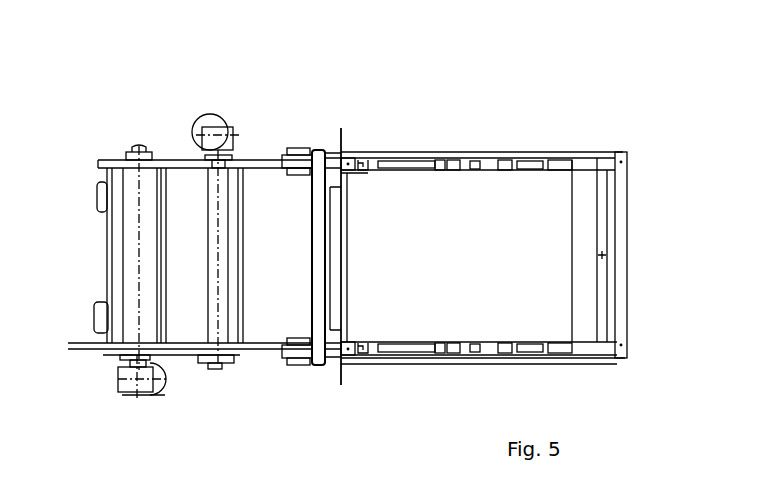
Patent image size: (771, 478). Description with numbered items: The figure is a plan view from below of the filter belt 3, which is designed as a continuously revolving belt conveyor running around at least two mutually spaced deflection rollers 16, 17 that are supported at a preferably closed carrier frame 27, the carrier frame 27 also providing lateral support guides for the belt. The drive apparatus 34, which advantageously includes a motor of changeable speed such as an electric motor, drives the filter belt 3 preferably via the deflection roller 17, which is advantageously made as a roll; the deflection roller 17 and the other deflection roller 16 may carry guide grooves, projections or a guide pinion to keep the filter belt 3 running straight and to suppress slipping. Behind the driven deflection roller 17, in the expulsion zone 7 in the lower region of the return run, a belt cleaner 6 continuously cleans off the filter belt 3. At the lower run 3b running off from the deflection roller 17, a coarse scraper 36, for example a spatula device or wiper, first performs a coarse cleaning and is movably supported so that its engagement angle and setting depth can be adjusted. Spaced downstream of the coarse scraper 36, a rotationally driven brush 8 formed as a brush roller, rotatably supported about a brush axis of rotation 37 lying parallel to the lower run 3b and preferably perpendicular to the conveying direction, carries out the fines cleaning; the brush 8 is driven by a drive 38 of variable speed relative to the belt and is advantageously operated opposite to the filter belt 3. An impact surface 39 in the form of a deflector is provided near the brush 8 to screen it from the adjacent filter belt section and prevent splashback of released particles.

The filter belt 3 is at (523, 188).
The lower run 3b is at (455, 192).
The belt cleaner 6 is at (238, 328).
The expulsion zone 7 is at (123, 309).
The brush 8 is at (228, 200).
The deflection roller 16 is at (578, 340).
The deflection roller 17 is at (140, 192).
The carrier frame 27 is at (400, 157).
The drive apparatus 34 is at (150, 395).
The coarse scraper 36 is at (162, 340).
The brush axis of rotation 37 is at (220, 258).
The drive 38 is at (218, 122).
The impact surface 39 is at (237, 210).